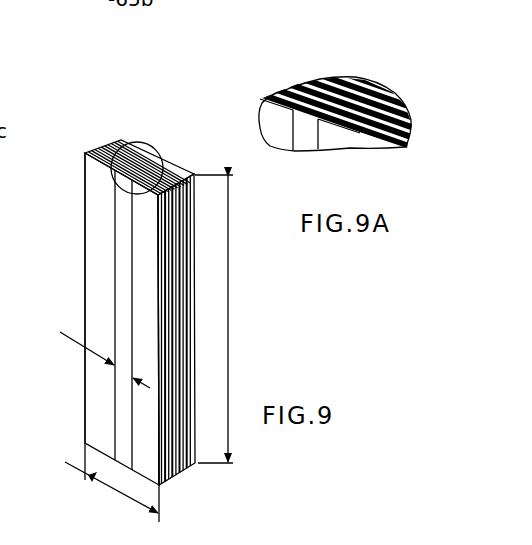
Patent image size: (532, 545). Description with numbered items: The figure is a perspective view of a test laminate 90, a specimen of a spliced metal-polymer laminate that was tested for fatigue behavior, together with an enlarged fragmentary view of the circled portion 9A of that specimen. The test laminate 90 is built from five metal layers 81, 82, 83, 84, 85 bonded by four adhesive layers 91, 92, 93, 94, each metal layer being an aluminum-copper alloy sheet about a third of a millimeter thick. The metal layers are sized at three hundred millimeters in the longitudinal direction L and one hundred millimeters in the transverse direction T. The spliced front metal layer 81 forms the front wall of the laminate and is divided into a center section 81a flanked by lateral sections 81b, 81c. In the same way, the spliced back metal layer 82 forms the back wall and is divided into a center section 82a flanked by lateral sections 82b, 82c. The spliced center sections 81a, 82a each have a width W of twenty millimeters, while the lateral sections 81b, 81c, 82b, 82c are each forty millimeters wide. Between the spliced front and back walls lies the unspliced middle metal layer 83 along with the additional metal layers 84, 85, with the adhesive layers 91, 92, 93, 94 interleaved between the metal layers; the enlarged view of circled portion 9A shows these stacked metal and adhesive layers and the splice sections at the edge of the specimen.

In FIG. 9, the spliced front metal layer 81 is at (84, 204).
In FIG. 9, the center section 81a is at (118, 232).
In FIG. 9A, the center section 81a is at (303, 138).
In FIG. 9, the lateral section 81b is at (95, 257).
In FIG. 9A, the lateral section 81b is at (268, 117).
In FIG. 9, the lateral section 81c is at (140, 305).
In FIG. 9A, the lateral section 81c is at (330, 140).
In FIG. 9, the spliced back metal layer 82 is at (122, 146).
In FIG. 9A, the spliced back metal layer 82 is at (337, 96).
In FIG. 9A, the center section 82a is at (377, 82).
In FIG. 9A, the lateral section 82b is at (348, 82).
In FIG. 9A, the lateral section 82c is at (397, 97).
In FIG. 9A, the unspliced middle metal layer 83 is at (397, 148).
In FIG. 9A, the metal layer 84 is at (412, 135).
In FIG. 9A, the metal layer 85 is at (410, 118).
In FIG. 9, the test laminate 90 is at (82, 180).
In FIG. 9A, the adhesive layer 91 is at (282, 92).
In FIG. 9A, the adhesive layer 92 is at (290, 84).
In FIG. 9A, the adhesive layer 93 is at (307, 80).
In FIG. 9A, the adhesive layer 94 is at (337, 78).
In FIG. 9, the detail circle 9A is at (135, 143).
In FIG. 9, the longitudinal direction L is at (229, 312).
In FIG. 9, the width W is at (92, 357).
In FIG. 9, the transverse direction T is at (103, 482).